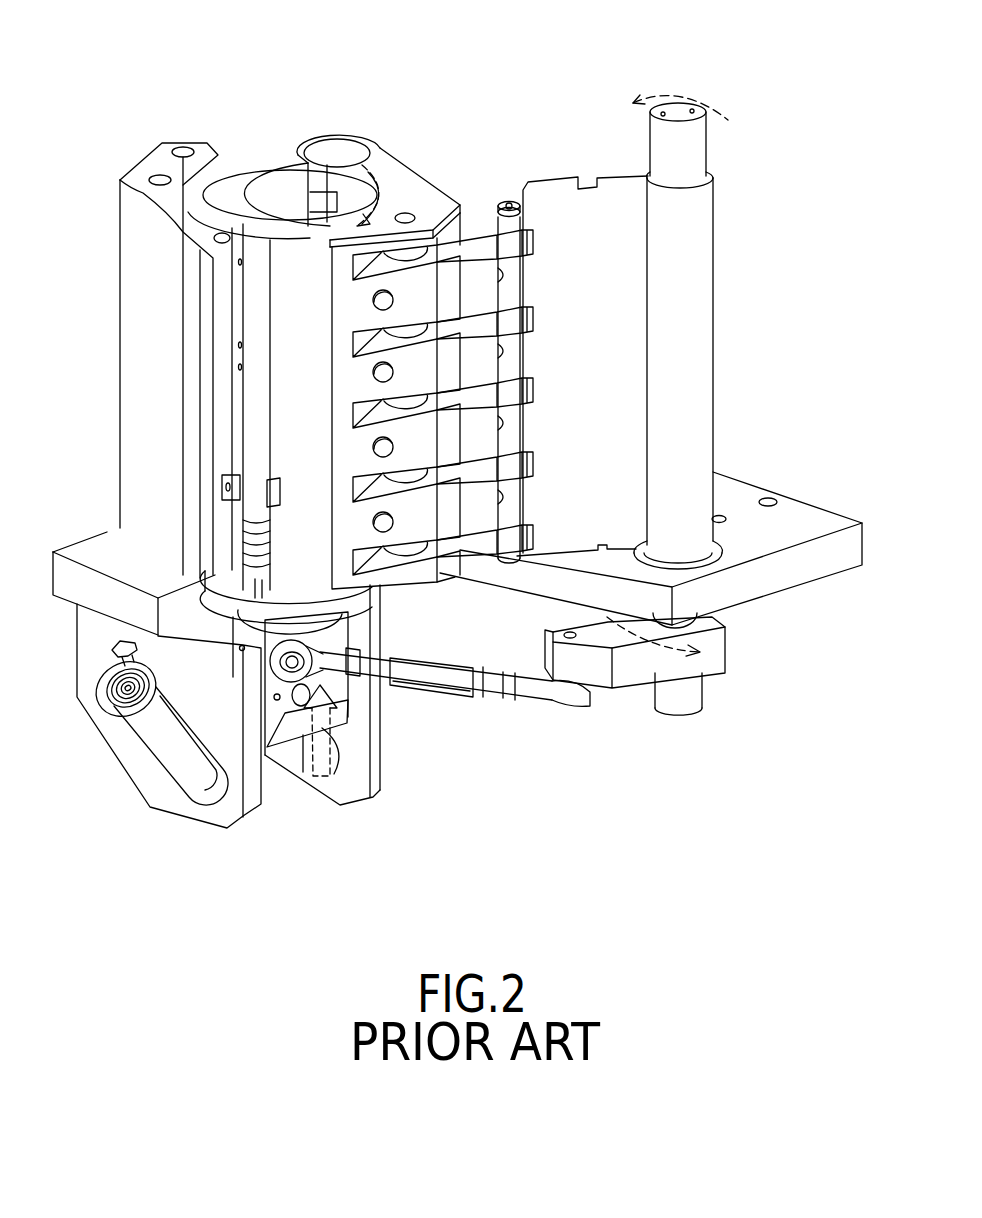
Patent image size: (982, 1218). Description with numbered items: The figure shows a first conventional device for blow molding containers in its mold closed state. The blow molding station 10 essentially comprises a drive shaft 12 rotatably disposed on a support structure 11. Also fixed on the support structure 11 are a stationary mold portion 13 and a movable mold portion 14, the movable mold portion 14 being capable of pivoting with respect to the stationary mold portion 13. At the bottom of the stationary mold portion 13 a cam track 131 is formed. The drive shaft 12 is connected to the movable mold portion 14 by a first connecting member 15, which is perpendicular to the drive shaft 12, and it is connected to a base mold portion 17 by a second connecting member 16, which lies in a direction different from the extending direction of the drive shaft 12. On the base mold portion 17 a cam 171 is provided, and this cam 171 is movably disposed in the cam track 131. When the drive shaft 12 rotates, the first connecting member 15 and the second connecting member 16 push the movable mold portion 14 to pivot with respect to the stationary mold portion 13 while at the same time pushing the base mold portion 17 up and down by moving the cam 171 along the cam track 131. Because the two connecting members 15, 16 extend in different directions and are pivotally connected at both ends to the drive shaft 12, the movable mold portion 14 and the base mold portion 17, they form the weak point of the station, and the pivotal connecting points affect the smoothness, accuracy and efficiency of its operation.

The blow molding station 10 is at (288, 90).
The support structure 11 is at (798, 514).
The drive shaft 12 is at (696, 150).
The stationary mold portion 13 is at (128, 266).
The cam track 131 is at (166, 762).
The movable mold portion 14 is at (408, 180).
The first connecting member 15 is at (470, 240).
The second connecting member 16 is at (485, 703).
The base mold portion 17 is at (288, 735).
The cam 171 is at (130, 688).